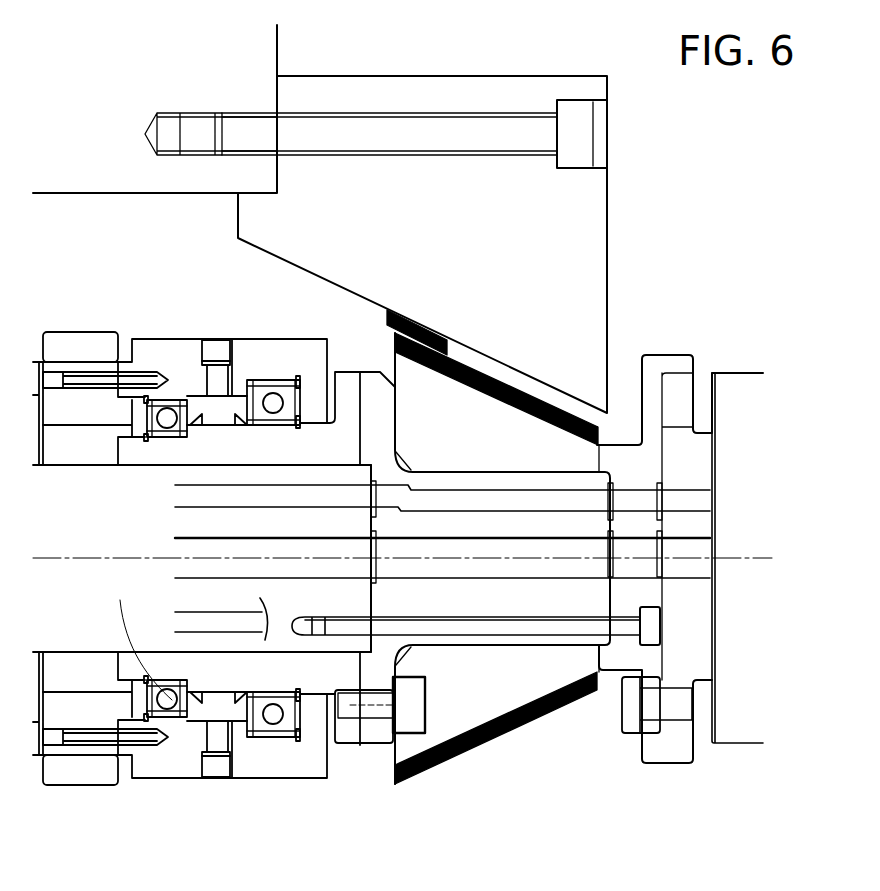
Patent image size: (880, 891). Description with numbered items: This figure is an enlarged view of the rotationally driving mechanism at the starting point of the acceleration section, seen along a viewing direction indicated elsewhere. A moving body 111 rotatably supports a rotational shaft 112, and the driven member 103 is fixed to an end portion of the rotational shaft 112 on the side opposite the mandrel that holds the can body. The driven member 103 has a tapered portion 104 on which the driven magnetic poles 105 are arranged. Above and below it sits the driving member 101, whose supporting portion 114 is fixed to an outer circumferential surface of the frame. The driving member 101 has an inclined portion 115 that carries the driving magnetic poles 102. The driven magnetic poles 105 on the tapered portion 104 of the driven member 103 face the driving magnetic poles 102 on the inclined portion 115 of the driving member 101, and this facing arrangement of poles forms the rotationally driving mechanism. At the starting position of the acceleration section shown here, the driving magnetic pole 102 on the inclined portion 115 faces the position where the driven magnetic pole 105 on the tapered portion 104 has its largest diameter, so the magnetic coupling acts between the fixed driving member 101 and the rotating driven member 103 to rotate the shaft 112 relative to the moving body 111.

The driving member 101 is at (713, 198).
The supporting portion 114 is at (522, 198).
The driving magnetic pole 102 is at (430, 322).
The inclined portion 115 is at (520, 378).
The driven member 103 is at (637, 812).
The tapered portion 104 is at (482, 680).
The driven magnetic pole 105 is at (520, 727).
The moving body 111 is at (73, 787).
The rotational shaft 112 is at (200, 718).